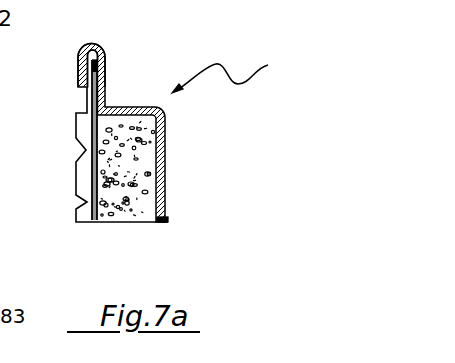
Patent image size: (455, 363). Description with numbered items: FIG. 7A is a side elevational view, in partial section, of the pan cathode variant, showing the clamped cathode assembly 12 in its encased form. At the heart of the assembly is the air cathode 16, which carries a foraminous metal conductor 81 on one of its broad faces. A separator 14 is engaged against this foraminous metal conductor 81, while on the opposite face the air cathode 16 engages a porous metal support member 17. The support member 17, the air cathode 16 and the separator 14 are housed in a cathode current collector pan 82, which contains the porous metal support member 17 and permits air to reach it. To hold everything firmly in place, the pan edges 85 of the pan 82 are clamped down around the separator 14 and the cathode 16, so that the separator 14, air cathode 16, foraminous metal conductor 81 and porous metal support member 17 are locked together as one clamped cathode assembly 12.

The clamped cathode assembly 12 is at (298, 75).
The separator 14 is at (76, 124).
The air cathode 16 is at (99, 205).
The porous metal support member 17 is at (140, 180).
The foraminous metal conductor 81 is at (97, 208).
The cathode current collector pan 82 is at (163, 143).
The pan edges 85 is at (80, 77).